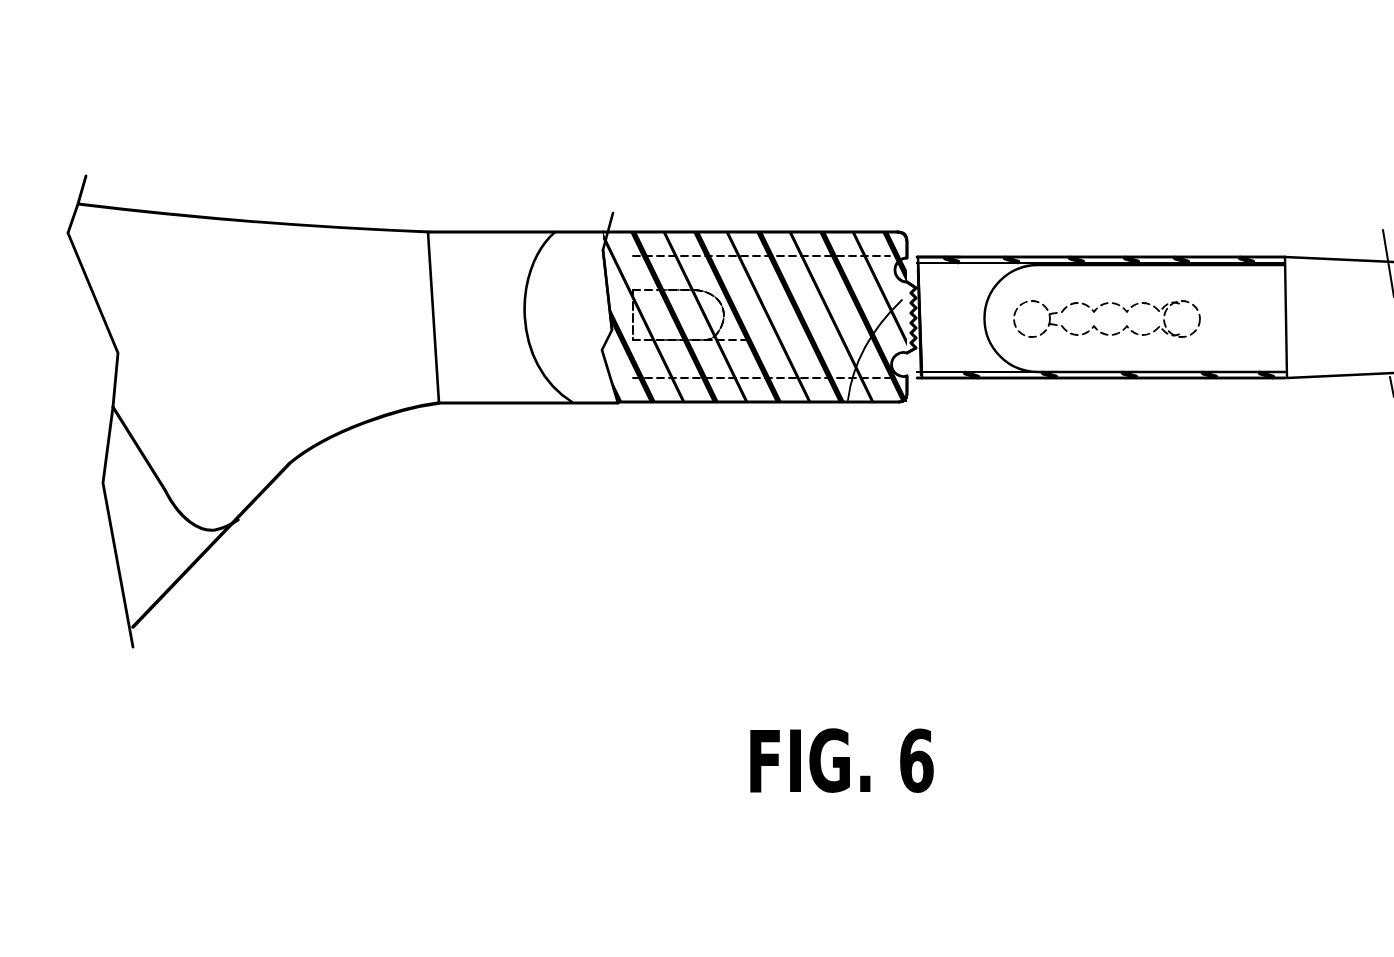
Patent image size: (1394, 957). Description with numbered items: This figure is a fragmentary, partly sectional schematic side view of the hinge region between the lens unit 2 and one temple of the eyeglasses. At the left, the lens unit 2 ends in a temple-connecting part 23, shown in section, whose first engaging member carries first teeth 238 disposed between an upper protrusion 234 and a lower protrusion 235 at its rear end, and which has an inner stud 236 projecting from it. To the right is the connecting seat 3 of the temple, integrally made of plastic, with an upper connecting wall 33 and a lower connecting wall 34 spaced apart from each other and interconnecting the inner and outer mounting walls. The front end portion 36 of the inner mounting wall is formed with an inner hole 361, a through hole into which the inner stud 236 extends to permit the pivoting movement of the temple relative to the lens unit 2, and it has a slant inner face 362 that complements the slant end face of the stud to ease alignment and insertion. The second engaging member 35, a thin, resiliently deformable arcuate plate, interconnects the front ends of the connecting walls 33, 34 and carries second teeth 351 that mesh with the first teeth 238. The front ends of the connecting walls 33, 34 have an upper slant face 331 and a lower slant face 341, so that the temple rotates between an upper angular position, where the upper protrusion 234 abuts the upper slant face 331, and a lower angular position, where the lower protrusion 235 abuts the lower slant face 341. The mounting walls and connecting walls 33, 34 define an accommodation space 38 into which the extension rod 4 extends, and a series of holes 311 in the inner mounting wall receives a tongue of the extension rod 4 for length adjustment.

The lens unit 2 is at (225, 198).
The temple-connecting part 23 is at (715, 232).
The upper protrusion 234 is at (908, 246).
The lower protrusion 235 is at (897, 402).
The inner stud 236 is at (630, 360).
The first teeth 238 is at (848, 400).
The connecting seat 3 is at (1063, 253).
The upper connecting wall 33 is at (1139, 256).
The upper slant face 331 is at (917, 257).
The lower connecting wall 34 is at (1182, 378).
The lower slant face 341 is at (912, 365).
The second engaging member 35 is at (924, 275).
The second teeth 351 is at (917, 282).
The front end portion of inner mounting wall 36 is at (703, 350).
The inner hole 361 is at (692, 350).
The slant inner face 362 is at (603, 345).
The accommodation space 38 is at (975, 350).
The holes 311 is at (1083, 325).
The extension rod 4 is at (1333, 253).